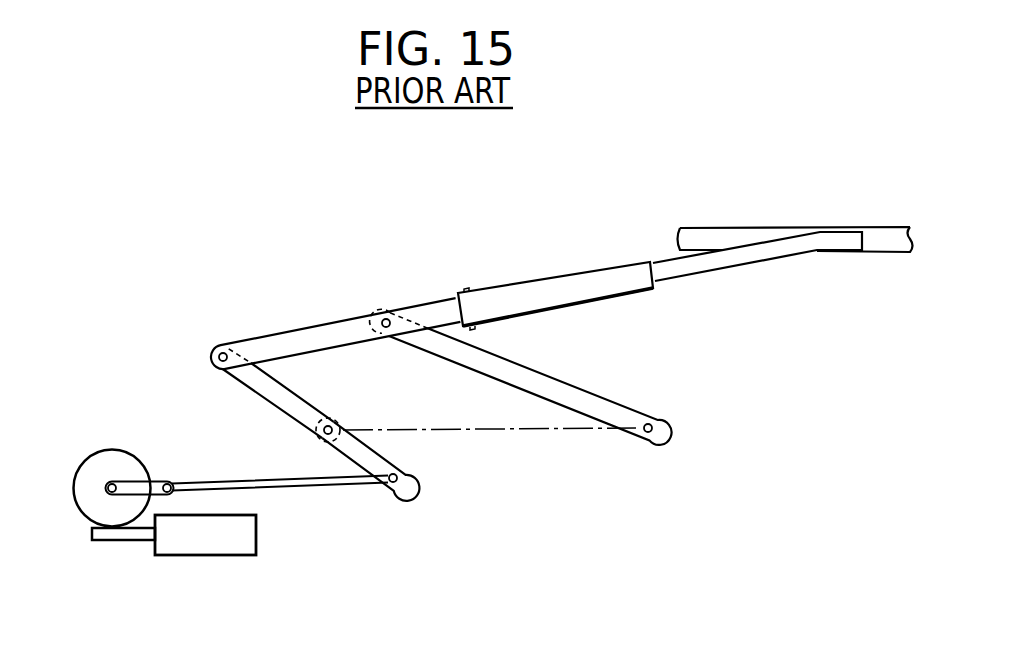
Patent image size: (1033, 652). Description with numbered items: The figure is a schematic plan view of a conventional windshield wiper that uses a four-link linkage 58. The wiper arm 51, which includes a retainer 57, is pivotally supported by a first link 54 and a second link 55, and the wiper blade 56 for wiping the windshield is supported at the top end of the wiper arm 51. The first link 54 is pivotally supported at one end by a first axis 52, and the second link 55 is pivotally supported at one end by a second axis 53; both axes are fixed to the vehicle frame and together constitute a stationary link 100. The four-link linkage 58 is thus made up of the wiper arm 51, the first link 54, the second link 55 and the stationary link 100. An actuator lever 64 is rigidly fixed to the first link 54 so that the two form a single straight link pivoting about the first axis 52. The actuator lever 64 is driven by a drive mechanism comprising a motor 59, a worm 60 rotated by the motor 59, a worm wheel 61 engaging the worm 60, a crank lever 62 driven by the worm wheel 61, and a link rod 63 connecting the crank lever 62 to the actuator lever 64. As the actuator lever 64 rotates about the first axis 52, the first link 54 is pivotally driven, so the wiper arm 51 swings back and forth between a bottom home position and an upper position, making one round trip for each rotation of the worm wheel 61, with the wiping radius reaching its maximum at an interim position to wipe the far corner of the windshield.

The wiper arm 51 is at (527, 275).
The first axis 52 is at (337, 422).
The second axis 53 is at (662, 423).
The first link 54 is at (285, 385).
The second link 55 is at (540, 373).
The wiper blade 56 is at (880, 235).
The retainer 57 is at (427, 304).
The four-link linkage 58 is at (291, 323).
The motor 59 is at (258, 528).
The worm 60 is at (117, 542).
The worm wheel 61 is at (110, 455).
The crank lever 62 is at (157, 478).
The link rod 63 is at (265, 478).
The actuator lever 64 is at (387, 455).
The stationary link 100 is at (513, 430).